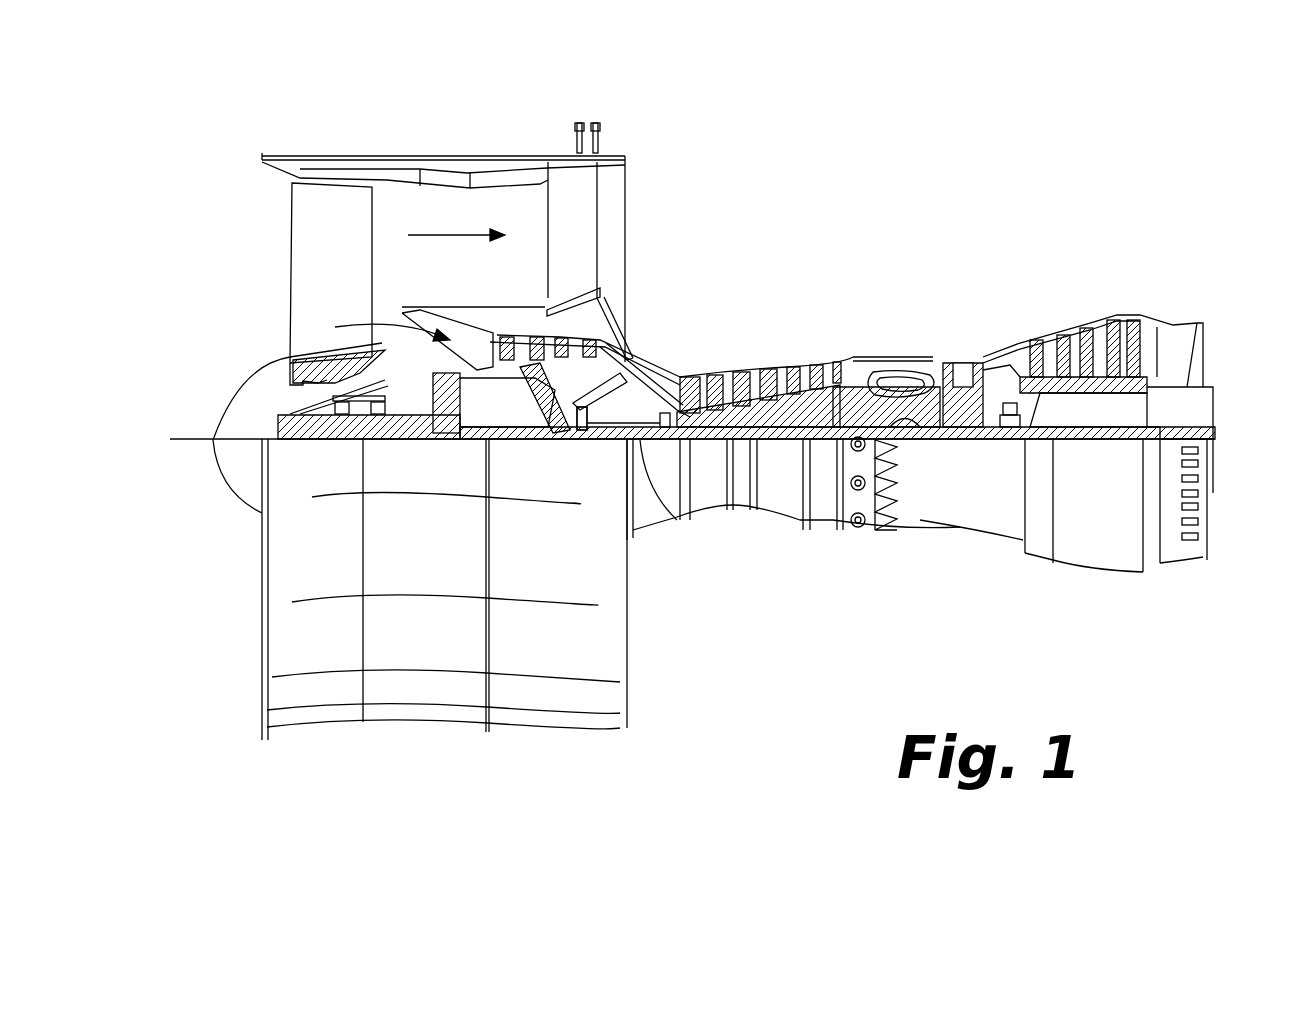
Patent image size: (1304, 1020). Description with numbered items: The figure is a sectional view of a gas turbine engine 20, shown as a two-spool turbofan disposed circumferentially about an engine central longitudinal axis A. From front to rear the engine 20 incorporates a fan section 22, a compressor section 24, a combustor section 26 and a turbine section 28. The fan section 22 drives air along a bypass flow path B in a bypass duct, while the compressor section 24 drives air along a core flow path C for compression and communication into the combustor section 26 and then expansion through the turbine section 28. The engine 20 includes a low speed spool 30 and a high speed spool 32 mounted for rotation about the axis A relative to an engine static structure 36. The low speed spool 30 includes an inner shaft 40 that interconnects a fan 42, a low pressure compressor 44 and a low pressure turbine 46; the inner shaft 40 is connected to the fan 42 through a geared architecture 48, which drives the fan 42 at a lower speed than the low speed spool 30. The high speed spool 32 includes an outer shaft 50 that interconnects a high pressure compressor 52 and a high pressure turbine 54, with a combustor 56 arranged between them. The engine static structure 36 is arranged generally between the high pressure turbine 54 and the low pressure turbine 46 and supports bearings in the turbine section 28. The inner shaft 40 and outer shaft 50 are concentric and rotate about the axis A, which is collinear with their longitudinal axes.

The gas turbine engine 20 is at (915, 192).
The fan section 22 is at (470, 127).
The compressor section 24 is at (875, 272).
The combustor section 26 is at (944, 272).
The turbine section 28 is at (945, 272).
The low speed spool 30 is at (790, 445).
The high speed spool 32 is at (825, 413).
The engine static structure 36 is at (825, 530).
The inner shaft 40 is at (683, 520).
The fan 42 is at (336, 291).
The low pressure compressor 44 is at (612, 302).
The low pressure turbine 46 is at (1088, 330).
The geared architecture 48 is at (452, 441).
The outer shaft 50 is at (905, 424).
The high pressure compressor 52 is at (760, 402).
The high pressure turbine 54 is at (962, 360).
The combustor 56 is at (900, 383).
The engine central longitudinal axis A is at (1240, 433).
The bypass flow path B is at (441, 230).
The core flow path C is at (382, 331).